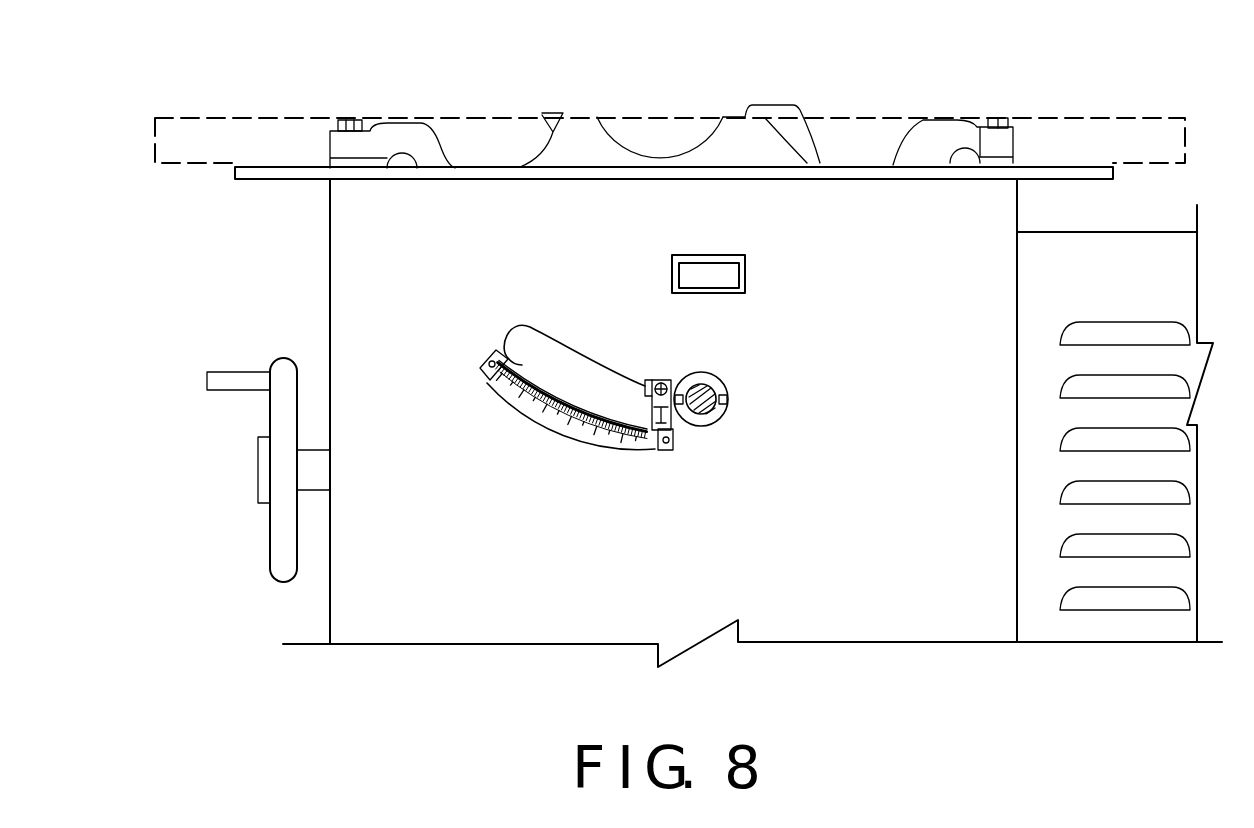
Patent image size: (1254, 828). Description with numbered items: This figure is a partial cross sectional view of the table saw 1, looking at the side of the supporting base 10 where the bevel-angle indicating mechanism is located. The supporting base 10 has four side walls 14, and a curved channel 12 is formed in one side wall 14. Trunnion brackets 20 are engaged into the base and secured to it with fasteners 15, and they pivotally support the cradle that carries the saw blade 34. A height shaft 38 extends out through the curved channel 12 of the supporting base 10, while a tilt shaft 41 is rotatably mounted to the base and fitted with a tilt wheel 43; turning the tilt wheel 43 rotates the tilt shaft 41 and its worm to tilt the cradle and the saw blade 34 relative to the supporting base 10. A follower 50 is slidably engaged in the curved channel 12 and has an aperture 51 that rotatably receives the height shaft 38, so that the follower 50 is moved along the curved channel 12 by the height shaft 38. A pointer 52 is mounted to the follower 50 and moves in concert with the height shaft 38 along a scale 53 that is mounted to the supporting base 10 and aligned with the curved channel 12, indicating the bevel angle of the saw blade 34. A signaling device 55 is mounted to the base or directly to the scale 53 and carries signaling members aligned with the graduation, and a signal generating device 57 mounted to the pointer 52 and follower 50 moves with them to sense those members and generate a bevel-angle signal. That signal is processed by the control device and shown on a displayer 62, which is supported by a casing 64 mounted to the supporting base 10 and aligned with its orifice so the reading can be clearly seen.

The table saw 1 is at (980, 46).
The supporting base 10 is at (990, 627).
The curved channel 12 is at (542, 343).
The side wall 14 is at (385, 622).
The fastener 15 is at (1000, 116).
The trunnion bracket 20 is at (370, 148).
The saw blade 34 is at (636, 146).
The height shaft 38 is at (718, 420).
The tilt shaft 41 is at (317, 458).
The tilt wheel 43 is at (280, 558).
The follower 50 is at (673, 422).
The aperture 51 is at (716, 379).
The pointer 52 is at (672, 432).
The scale 53 is at (580, 444).
The signaling device 55 is at (501, 356).
The signal generating device 57 is at (645, 380).
The displayer 62 is at (688, 275).
The casing 64 is at (739, 259).